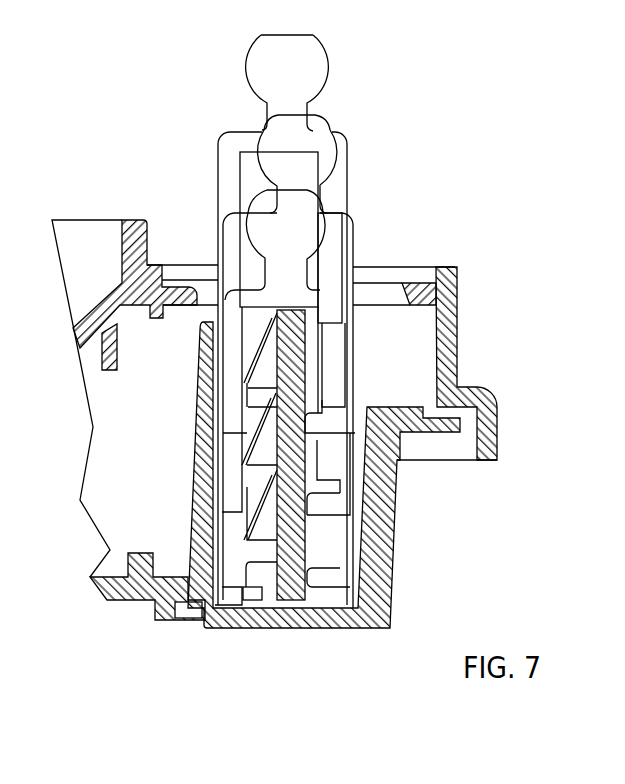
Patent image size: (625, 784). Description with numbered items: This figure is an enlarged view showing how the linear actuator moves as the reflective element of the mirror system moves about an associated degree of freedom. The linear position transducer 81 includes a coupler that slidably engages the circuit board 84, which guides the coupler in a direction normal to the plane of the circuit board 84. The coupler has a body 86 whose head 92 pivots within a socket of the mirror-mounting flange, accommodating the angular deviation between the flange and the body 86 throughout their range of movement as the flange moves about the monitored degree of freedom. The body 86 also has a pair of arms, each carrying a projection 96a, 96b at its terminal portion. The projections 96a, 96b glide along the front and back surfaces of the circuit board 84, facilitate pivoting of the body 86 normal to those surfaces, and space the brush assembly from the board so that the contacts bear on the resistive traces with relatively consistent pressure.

The head 92 is at (326, 53).
The linear position transducer 81 is at (211, 254).
The body 86 is at (355, 238).
The circuit board 84 is at (243, 585).
The projection 96a is at (248, 600).
The projection 96b is at (307, 568).